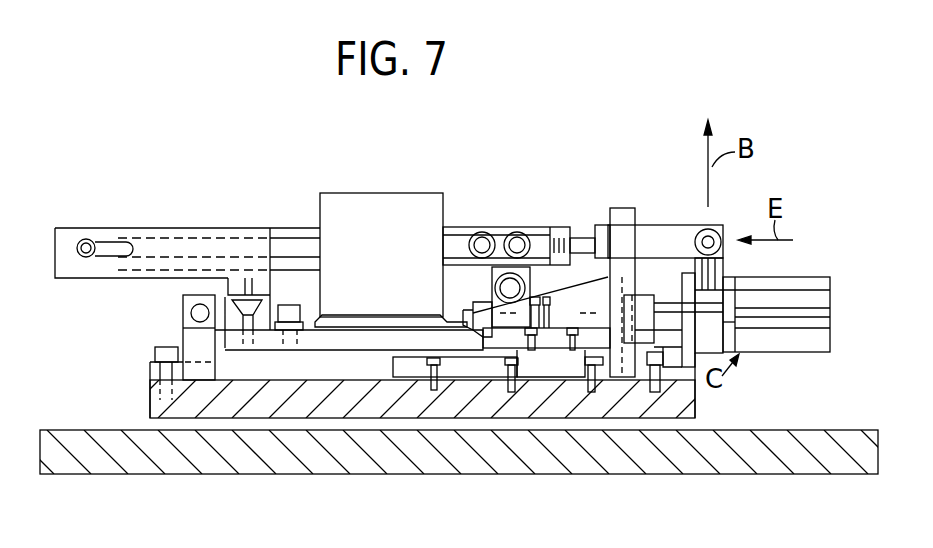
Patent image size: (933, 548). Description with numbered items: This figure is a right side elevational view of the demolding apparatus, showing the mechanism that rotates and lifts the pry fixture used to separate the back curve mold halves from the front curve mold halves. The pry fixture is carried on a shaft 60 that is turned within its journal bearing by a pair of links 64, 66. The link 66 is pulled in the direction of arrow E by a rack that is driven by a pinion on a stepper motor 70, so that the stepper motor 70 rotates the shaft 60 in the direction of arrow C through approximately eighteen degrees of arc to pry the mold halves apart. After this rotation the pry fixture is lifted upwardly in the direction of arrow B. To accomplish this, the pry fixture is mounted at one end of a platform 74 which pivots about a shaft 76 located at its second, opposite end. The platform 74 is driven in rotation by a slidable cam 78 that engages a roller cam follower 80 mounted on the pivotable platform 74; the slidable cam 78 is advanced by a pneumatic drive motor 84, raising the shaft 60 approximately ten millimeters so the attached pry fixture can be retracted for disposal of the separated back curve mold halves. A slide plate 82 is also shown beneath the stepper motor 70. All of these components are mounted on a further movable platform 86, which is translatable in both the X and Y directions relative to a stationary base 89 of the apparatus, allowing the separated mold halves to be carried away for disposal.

The shaft 60 is at (727, 322).
The link 64 is at (723, 270).
The link 66 is at (660, 225).
The stepper motor 70 is at (397, 228).
The platform 74 is at (343, 342).
The shaft 76 is at (183, 307).
The slidable cam 78 is at (565, 303).
The roller cam follower 80 is at (496, 268).
The slide plate 82 is at (330, 333).
The pneumatic drive motor 84 is at (830, 300).
The movable platform 86 is at (697, 410).
The stationary base 89 is at (270, 476).